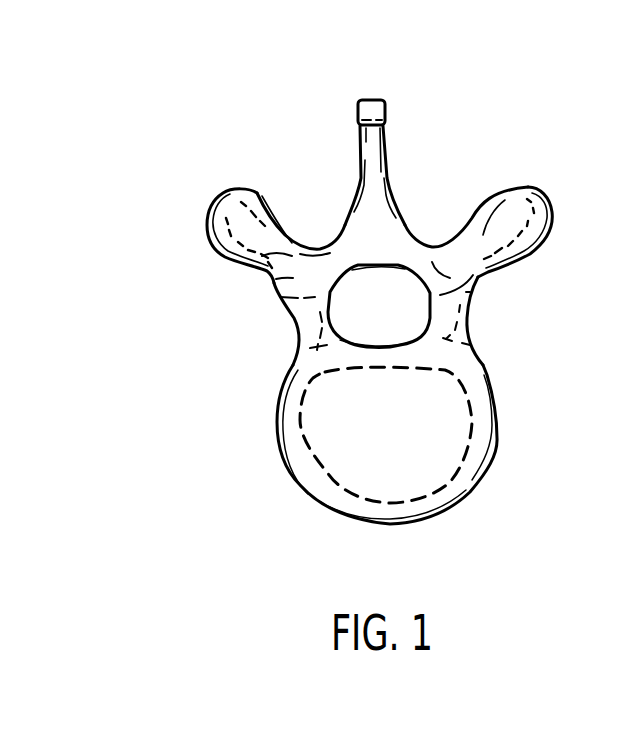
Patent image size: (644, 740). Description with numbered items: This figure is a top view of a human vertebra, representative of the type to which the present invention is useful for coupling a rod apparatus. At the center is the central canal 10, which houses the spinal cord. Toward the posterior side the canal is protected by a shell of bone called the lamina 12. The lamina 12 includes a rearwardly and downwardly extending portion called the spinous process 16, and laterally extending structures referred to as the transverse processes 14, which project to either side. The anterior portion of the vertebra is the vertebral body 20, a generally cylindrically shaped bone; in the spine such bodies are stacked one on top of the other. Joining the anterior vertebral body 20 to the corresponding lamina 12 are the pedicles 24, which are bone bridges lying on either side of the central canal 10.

The central canal 10 is at (400, 320).
The lamina 12 is at (447, 168).
The transverse processes 14 is at (213, 194).
The spinous process 16 is at (373, 100).
The vertebral body 20 is at (366, 448).
The pedicles 24 is at (305, 322).